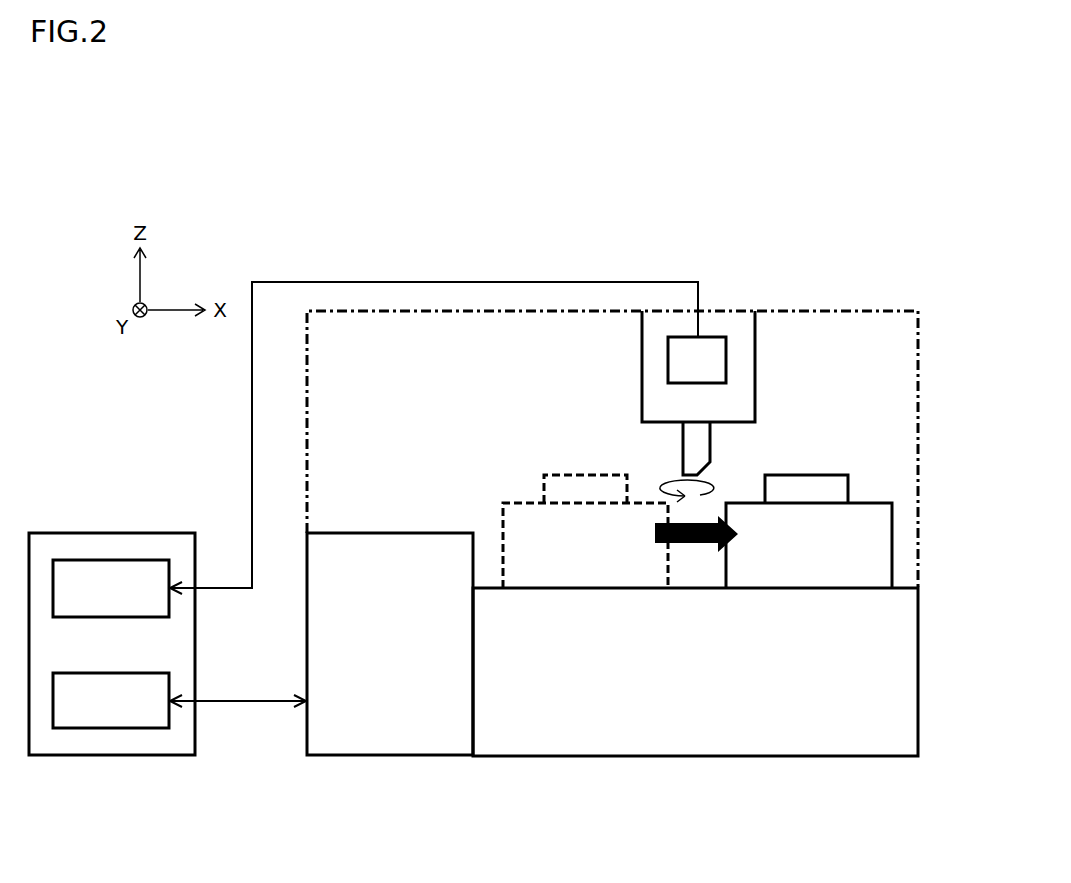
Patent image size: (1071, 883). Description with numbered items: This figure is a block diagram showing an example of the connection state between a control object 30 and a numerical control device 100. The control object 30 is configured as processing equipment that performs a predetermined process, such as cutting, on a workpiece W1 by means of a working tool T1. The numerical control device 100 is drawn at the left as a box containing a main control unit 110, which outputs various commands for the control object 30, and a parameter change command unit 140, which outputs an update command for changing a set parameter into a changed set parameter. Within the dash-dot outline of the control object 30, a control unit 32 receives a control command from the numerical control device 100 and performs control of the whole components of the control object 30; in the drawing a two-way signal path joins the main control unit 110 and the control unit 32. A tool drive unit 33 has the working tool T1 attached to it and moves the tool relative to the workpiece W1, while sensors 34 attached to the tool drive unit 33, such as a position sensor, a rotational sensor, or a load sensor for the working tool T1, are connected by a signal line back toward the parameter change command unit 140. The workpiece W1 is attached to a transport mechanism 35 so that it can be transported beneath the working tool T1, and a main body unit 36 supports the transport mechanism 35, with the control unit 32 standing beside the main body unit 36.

The control object 30 is at (805, 311).
The control unit 32 is at (390, 533).
The tool drive unit 33 is at (642, 380).
The sensors 34 is at (707, 336).
The transport mechanism 35 is at (860, 503).
The main body unit 36 is at (684, 693).
The numerical control device 100 is at (83, 533).
The main control unit 110 is at (110, 728).
The parameter change command unit 140 is at (140, 560).
The working tool T1 is at (682, 464).
The workpiece W1 is at (810, 474).